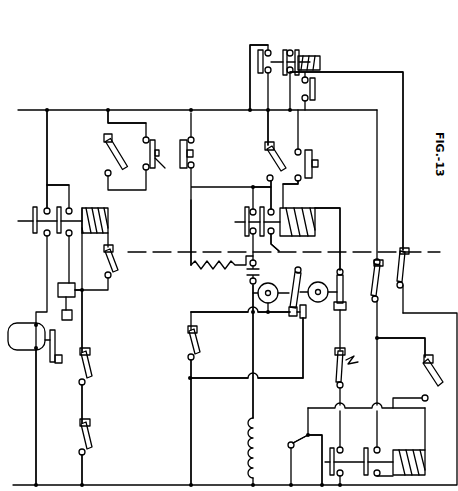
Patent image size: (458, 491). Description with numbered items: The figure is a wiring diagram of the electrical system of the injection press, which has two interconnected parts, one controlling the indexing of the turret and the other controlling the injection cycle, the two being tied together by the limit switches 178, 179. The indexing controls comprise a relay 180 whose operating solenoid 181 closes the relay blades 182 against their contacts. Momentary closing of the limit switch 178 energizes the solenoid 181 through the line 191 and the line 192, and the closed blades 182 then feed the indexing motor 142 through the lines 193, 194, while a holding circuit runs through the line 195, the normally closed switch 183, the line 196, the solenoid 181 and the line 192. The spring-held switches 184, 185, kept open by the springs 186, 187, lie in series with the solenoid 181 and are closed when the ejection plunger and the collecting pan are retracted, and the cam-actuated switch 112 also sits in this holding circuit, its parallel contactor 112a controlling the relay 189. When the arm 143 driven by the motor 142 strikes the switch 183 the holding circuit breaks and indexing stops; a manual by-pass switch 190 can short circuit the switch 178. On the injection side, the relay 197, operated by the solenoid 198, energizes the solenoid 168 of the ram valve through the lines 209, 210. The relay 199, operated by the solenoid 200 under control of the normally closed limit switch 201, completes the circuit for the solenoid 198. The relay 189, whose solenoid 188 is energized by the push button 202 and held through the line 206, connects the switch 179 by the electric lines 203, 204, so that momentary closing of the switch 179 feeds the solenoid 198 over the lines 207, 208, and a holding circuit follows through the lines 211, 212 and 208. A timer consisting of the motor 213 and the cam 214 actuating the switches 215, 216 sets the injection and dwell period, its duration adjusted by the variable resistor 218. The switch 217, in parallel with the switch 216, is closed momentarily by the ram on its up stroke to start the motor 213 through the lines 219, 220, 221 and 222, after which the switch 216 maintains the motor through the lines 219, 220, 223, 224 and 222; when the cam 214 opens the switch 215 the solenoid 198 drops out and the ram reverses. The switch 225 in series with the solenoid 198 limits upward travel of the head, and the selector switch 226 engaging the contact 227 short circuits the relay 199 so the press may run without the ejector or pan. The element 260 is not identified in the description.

The electric switch 112 is at (104, 261).
The contactor 112a is at (398, 276).
The electric motor 142 is at (22, 350).
The arm 143 is at (54, 364).
The solenoid 168 is at (255, 458).
The limit switch 178 is at (106, 154).
The limit switch 179 is at (267, 149).
The relay 180 is at (82, 208).
The operating solenoid 181 is at (92, 206).
The relay blades 182 is at (28, 218).
The electric switch 183 is at (58, 288).
The electric switch 184 is at (90, 373).
The electric switch 185 is at (94, 455).
The spring 186 is at (81, 381).
The spring 187 is at (80, 448).
The solenoid 188 is at (319, 62).
The relay 189 is at (270, 71).
The by-pass switch 190 is at (158, 164).
The line 191 is at (108, 122).
The line 192 is at (83, 323).
The line 193 is at (47, 148).
The line 194 is at (36, 407).
The line 195 is at (66, 184).
The line 196 is at (84, 291).
The relay 197 is at (242, 206).
The electric solenoid 198 is at (317, 225).
The relay 199 is at (360, 454).
The solenoid 200 is at (405, 448).
The limit switch 201 is at (373, 287).
The push button 202 is at (316, 86).
The electric line 203 is at (247, 88).
The electric line 204 is at (268, 128).
The electric line 206 is at (403, 126).
The electric line 207 is at (292, 171).
The electric line 208 is at (340, 264).
The line 209 is at (193, 192).
The line 210 is at (251, 350).
The line 211 is at (266, 185).
The line 212 is at (278, 255).
The electric motor 213 is at (253, 293).
The cam 214 is at (316, 301).
The electric switch 215 is at (346, 310).
The electric switch 216 is at (292, 316).
The electric switch 217 is at (186, 333).
The variable resistor 218 is at (209, 268).
The line 219 is at (191, 238).
The line 220 is at (316, 182).
The line 221 is at (203, 310).
The line 222 is at (200, 410).
The line 223 is at (272, 318).
The line 224 is at (253, 387).
The electric switch 225 is at (346, 380).
The selector switch 226 is at (288, 451).
The contact 227 is at (314, 459).
The capacitor 260 is at (254, 270).